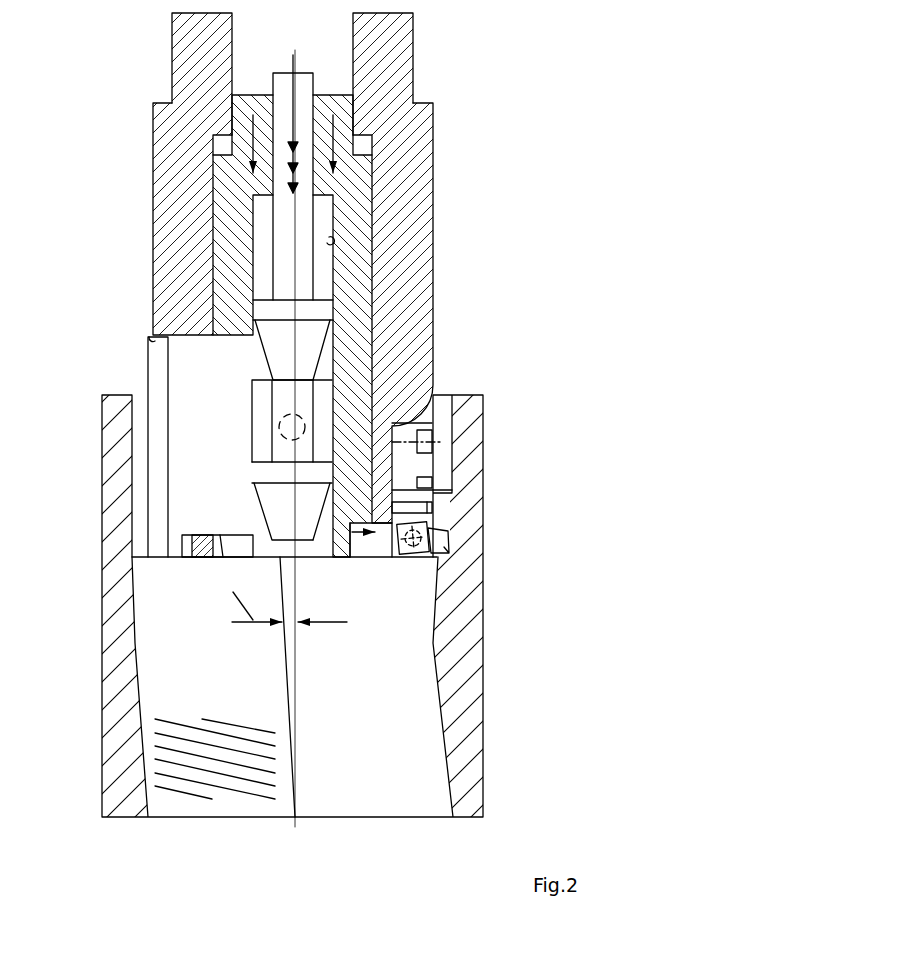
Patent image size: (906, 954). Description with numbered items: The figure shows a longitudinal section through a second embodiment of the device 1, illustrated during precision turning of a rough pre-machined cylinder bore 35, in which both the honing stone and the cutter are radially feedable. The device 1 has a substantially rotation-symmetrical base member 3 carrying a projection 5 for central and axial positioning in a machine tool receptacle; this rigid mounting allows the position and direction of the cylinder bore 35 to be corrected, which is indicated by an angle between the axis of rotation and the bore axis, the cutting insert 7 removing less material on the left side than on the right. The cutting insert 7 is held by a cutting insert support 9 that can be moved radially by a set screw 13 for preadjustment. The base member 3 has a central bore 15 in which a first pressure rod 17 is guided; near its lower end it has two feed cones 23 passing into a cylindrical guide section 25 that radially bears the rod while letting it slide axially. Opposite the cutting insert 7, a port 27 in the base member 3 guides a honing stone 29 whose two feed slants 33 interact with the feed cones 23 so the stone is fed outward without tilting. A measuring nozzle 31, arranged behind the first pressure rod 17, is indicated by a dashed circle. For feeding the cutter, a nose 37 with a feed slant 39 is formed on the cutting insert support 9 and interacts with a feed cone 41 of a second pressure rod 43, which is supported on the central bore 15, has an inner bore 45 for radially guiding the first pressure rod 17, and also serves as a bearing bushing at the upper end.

The device 1 is at (513, 153).
The base member 3 is at (412, 145).
The projection 5 is at (427, 93).
The cutting insert 7 is at (445, 543).
The cutting insert support 9 is at (427, 472).
The set screw 13 is at (428, 509).
The central bore 15 is at (210, 147).
The first pressure rod 17 is at (277, 253).
The feed cones 23 is at (325, 353).
The cylindrical guide section 25 is at (260, 313).
The port 27 is at (152, 340).
The honing stone 29 is at (185, 413).
The measuring nozzle 31 is at (307, 427).
The feed slants 33 is at (270, 361).
The cylinder bore 35 is at (143, 742).
The nose 37 is at (384, 541).
The feed slant 39 is at (356, 524).
The feed cone 41 is at (361, 538).
The second pressure rod 43 is at (362, 297).
The inner bore 45 is at (327, 243).